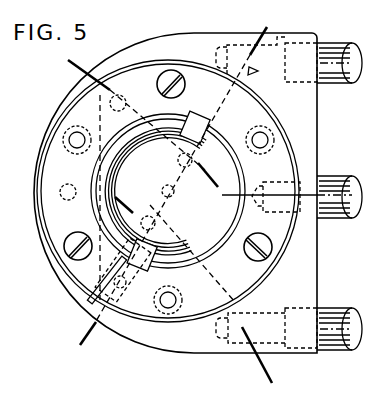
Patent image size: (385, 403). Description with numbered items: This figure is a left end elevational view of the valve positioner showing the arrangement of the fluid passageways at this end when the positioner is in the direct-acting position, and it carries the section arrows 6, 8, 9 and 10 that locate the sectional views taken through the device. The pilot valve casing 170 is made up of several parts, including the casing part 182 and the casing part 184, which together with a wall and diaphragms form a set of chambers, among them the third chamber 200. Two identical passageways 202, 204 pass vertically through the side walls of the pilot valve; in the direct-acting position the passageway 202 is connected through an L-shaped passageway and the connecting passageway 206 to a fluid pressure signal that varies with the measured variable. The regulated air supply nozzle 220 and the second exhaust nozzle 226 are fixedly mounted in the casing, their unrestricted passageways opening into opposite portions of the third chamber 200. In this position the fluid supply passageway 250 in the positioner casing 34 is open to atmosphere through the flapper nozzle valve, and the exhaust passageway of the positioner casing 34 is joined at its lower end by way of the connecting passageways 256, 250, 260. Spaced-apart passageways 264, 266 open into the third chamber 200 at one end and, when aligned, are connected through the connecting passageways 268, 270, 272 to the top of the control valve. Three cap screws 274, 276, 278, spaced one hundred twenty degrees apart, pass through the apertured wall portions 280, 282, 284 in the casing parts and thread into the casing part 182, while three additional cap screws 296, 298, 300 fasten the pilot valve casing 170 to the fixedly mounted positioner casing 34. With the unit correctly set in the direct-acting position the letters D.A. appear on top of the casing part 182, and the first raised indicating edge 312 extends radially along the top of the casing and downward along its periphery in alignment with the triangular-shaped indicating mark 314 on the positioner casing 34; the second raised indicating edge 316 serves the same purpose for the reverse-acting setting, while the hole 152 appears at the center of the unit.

The positioner casing 34 is at (278, 352).
The central bore 152 is at (166, 186).
The pilot valve casing 170 is at (62, 298).
The casing part 182 is at (60, 166).
The casing part 184 is at (108, 92).
The third chamber 200 is at (66, 279).
The passageway 202 is at (312, 157).
The passageway 204 is at (60, 194).
The connecting passageway 206 is at (333, 186).
The regulated air supply nozzle 220 is at (209, 218).
The second exhaust nozzle 226 is at (146, 216).
The fluid supply passageway 250 is at (240, 345).
The connecting passageway 256 is at (260, 292).
The connecting passageway 260 is at (328, 315).
The passageway 264 is at (135, 318).
The passageway 266 is at (218, 100).
The connecting passageway 268 is at (262, 98).
The connecting passageway 270 is at (262, 44).
The connecting passageway 272 is at (338, 53).
The cap screw 274 is at (268, 138).
The cap screw 276 is at (180, 310).
The cap screw 278 is at (69, 138).
The apertured wall portion 280 is at (273, 133).
The apertured wall portion 282 is at (167, 308).
The apertured wall portion 284 is at (66, 132).
The cap screw 296 is at (165, 80).
The cap screw 298 is at (272, 250).
The cap screw 300 is at (66, 243).
The first raised indicating edge 312 is at (238, 83).
The triangular-shaped indicating mark 314 is at (242, 72).
The second raised indicating edge 316 is at (96, 304).
The section line 6- 6 is at (257, 37).
The section line 8- 8 is at (230, 198).
The section line 9- 9 is at (85, 68).
The section line 10- 10 is at (118, 203).